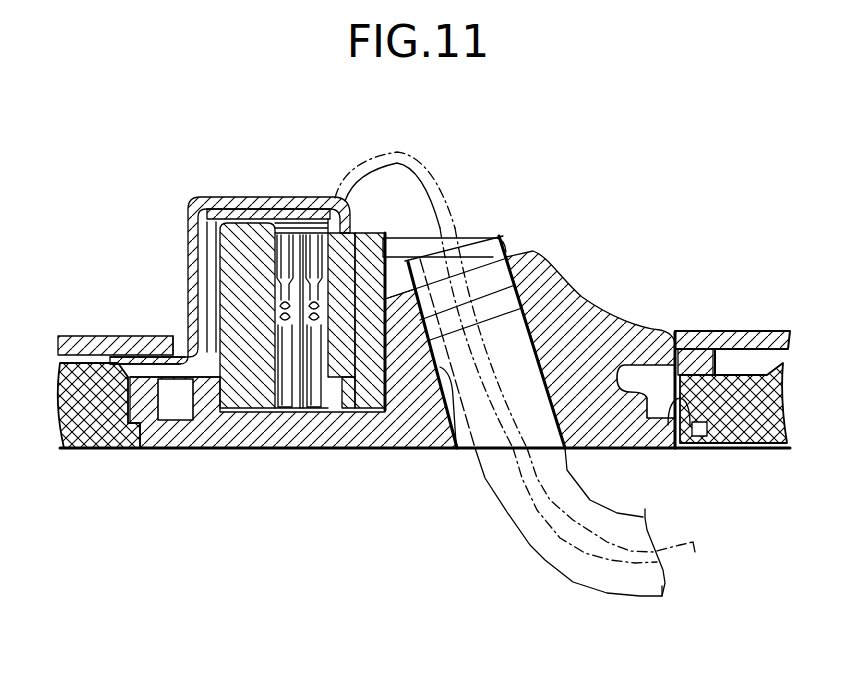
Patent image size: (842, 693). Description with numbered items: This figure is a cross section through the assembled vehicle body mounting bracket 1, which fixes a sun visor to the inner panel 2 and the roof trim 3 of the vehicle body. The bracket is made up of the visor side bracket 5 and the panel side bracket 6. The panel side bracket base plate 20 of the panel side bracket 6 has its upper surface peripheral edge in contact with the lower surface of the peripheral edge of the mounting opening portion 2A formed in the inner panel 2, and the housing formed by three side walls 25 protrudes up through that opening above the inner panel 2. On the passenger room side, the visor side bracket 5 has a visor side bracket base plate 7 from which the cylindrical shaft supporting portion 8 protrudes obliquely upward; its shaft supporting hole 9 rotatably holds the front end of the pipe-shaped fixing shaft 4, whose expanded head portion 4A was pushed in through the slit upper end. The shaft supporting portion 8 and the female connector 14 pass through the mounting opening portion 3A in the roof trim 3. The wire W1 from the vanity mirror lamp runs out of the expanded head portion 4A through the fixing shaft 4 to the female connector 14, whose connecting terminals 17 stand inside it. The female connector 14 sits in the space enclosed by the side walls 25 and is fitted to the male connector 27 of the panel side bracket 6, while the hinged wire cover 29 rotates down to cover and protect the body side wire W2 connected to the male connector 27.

The vehicle body mounting bracket 1 is at (712, 208).
The inner panel 2 is at (90, 345).
The mounting opening portion 2A is at (662, 332).
The roof trim 3 is at (55, 410).
The mounting opening portion 3A is at (687, 450).
The fixing shaft 4 is at (537, 563).
The expanded head portion 4A is at (490, 237).
The visor side bracket 5 is at (241, 462).
The panel side bracket 6 is at (132, 340).
The visor side bracket base plate 7 is at (640, 450).
The shaft supporting portion 8 is at (552, 252).
The shaft supporting hole 9 is at (458, 450).
The female connector 14 is at (358, 420).
The connecting terminals 17 is at (222, 406).
The panel side bracket base plate 20 is at (177, 382).
The side walls 25 is at (184, 232).
The male connector 27 is at (338, 388).
The wire cover 29 is at (230, 198).
The wire W1 is at (437, 177).
The wire W2 is at (153, 360).